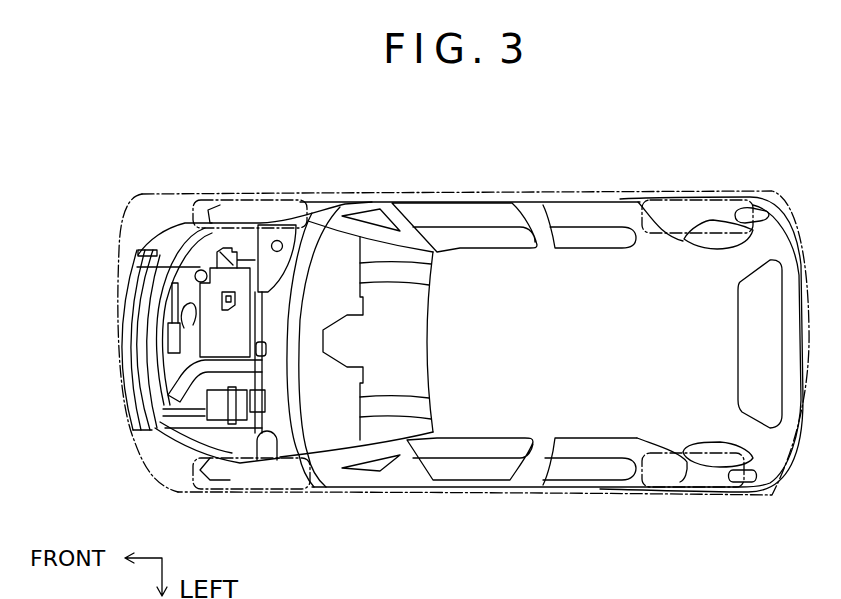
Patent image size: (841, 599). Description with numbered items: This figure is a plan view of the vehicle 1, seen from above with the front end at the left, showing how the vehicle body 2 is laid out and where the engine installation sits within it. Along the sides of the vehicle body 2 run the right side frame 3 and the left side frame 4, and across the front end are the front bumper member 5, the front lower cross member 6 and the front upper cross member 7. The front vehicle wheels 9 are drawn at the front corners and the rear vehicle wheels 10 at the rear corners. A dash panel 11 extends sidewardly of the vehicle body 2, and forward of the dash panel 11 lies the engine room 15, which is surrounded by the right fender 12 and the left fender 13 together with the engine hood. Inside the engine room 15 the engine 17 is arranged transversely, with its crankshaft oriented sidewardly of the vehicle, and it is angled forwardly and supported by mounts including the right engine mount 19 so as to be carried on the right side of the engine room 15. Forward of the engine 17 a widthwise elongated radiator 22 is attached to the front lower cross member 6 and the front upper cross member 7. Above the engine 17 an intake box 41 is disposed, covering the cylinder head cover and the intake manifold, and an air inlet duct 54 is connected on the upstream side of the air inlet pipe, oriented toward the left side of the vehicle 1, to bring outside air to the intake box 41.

The vehicle 1 is at (687, 157).
The vehicle body 2 is at (461, 180).
The right side frame 3 is at (160, 248).
The left side frame 4 is at (158, 430).
The front bumper member 5 is at (137, 412).
The front lower cross member 6 is at (140, 388).
The front upper cross member 7 is at (163, 273).
The front vehicle wheels 9 is at (300, 199).
The rear vehicle wheels 10 is at (738, 190).
The dash panel 11 is at (293, 297).
The right fender 12 is at (216, 206).
The left fender 13 is at (228, 480).
The engine room 15 is at (158, 437).
The engine 17 is at (190, 298).
The right engine mount 19 is at (218, 250).
The radiator 22 is at (170, 362).
The intake box 41 is at (277, 286).
The air inlet duct 54 is at (227, 362).